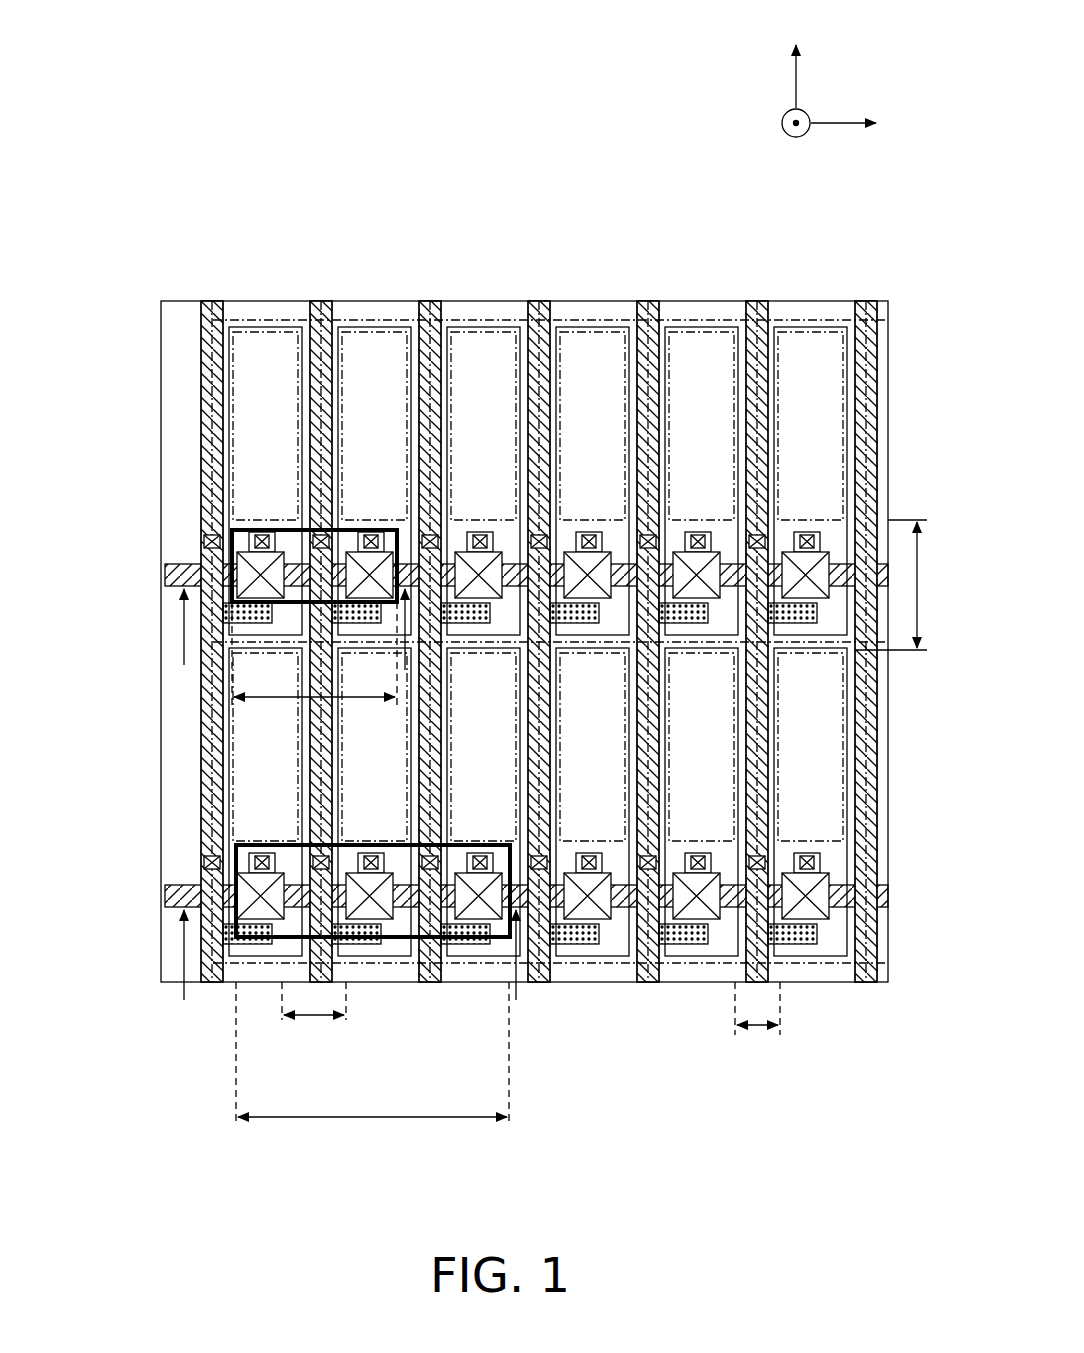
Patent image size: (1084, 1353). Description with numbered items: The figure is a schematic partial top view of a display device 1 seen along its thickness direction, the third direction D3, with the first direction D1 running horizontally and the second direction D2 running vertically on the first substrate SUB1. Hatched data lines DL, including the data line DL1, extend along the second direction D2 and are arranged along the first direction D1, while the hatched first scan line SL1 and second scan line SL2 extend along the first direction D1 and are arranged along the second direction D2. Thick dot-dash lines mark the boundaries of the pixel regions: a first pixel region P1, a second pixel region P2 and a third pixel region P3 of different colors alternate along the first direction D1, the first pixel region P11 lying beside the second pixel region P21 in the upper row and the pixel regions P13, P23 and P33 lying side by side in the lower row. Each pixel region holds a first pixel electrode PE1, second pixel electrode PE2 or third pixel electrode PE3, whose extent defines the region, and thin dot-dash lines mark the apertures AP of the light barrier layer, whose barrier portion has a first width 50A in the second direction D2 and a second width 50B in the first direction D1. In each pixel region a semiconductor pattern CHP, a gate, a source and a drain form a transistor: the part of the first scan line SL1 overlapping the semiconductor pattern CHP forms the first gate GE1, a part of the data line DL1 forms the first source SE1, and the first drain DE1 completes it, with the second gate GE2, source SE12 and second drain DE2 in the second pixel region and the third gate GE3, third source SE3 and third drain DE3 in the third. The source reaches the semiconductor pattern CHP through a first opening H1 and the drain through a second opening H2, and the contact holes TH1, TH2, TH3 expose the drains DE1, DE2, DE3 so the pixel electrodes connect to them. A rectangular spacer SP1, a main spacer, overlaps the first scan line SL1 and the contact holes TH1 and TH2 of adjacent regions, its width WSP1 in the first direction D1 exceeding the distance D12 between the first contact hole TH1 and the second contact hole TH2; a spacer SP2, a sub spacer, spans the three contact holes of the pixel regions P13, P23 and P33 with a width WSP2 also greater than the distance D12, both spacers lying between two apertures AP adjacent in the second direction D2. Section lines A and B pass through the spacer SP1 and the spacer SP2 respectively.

The display device 1 is at (918, 1166).
The first substrate SUB1 is at (162, 342).
The data line DL1 is at (211, 300).
The data lines DL is at (320, 300).
The first pixel electrode PE1 is at (257, 327).
The second pixel electrode PE2 is at (366, 327).
The third pixel electrode PE3 is at (475, 327).
The first pixel region P11 is at (292, 300).
The second pixel region P21 is at (401, 300).
The first pixel region P1 is at (619, 300).
The second pixel region P2 is at (728, 300).
The third pixel region P3 is at (510, 300).
The pixel region P13 is at (259, 988).
The pixel region P23 is at (374, 988).
The pixel region P33 is at (478, 988).
The first source SE1 is at (539, 533).
The second source electrode SE12 is at (648, 533).
The third source SE3 is at (757, 533).
The first gate GE1 is at (562, 552).
The second gate GE2 is at (671, 552).
The third gate GE3 is at (780, 552).
The first drain DE1 is at (605, 565).
The second drain DE2 is at (714, 565).
The third drain DE3 is at (823, 565).
The first contact hole TH1 is at (589, 532).
The second contact hole TH2 is at (698, 532).
The third contact hole TH3 is at (807, 532).
The first scan line SL1 is at (167, 575).
The second scan line SL2 is at (167, 896).
The spacer SP1 is at (232, 553).
The spacer SP2 is at (236, 870).
The semiconductor pattern CHP is at (240, 610).
The apertures AP is at (862, 421).
The width of the spacer SP1 WSP1 is at (232, 698).
The width of the spacer SP2 WSP2 is at (372, 1068).
The distance between the first contact hole and the second contact hole D12 is at (314, 1018).
The first width of the barrier portion 50A is at (895, 585).
The second width of the barrier portion 50B is at (757, 1028).
The first opening H1 is at (762, 852).
The second opening H2 is at (809, 854).
The section line A-A' A is at (295, 646).
The section line B-B' B is at (354, 972).
The first direction D1 is at (861, 122).
The second direction D2 is at (798, 57).
The third direction D3 is at (794, 142).